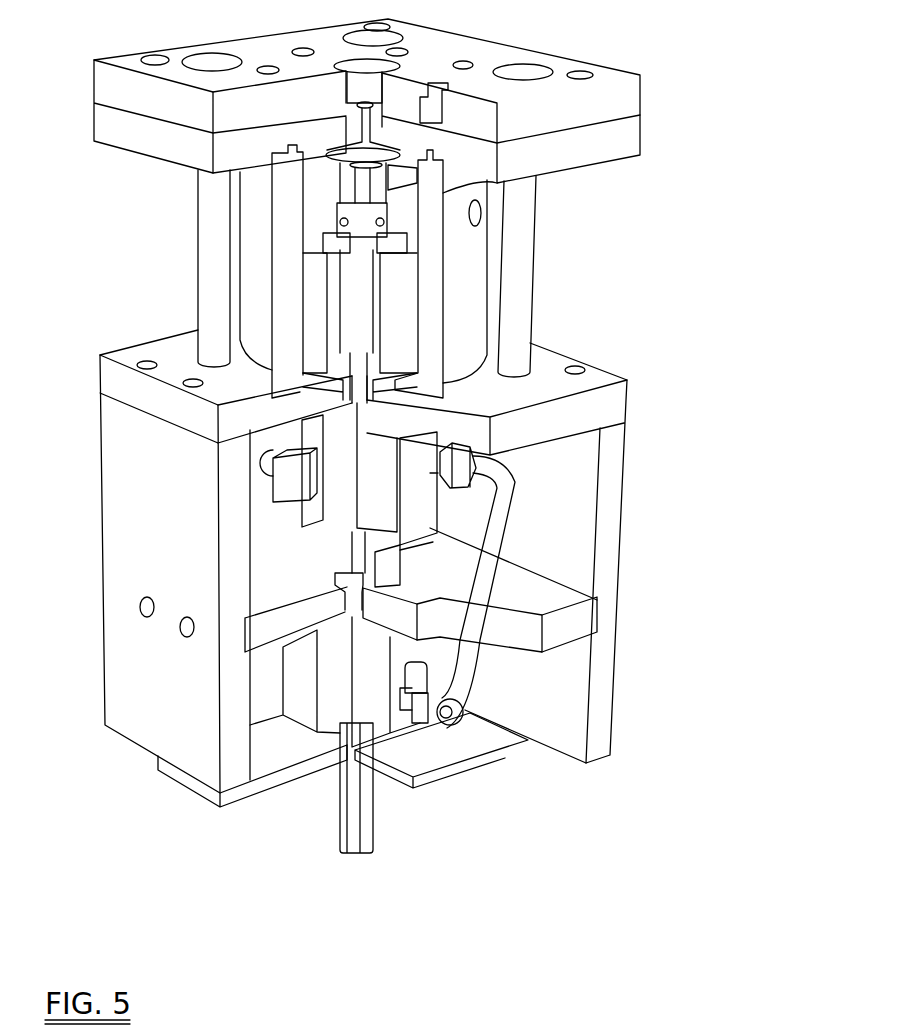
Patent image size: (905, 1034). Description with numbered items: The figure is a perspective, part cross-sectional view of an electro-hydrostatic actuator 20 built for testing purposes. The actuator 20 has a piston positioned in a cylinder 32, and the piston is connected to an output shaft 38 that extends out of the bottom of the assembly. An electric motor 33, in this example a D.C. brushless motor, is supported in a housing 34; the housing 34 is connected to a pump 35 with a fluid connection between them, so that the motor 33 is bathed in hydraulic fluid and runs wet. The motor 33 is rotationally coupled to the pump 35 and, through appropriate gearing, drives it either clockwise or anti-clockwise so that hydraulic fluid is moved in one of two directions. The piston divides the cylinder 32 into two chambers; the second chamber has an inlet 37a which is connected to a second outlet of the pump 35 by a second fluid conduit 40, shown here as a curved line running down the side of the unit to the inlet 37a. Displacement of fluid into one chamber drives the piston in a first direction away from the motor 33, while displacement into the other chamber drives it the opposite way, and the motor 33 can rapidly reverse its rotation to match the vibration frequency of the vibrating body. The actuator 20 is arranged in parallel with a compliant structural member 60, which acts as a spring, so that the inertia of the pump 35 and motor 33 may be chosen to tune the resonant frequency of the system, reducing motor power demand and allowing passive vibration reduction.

The electro-hydrostatic actuator 20 is at (616, 309).
The cylinder 32 is at (330, 707).
The electric motor 33 is at (313, 315).
The housing 34 is at (430, 292).
The pump 35 is at (340, 477).
The inlet 37a is at (441, 727).
The output shaft 38 is at (373, 835).
The second fluid conduit 40 is at (488, 573).
The compliant structural member 60 is at (483, 740).